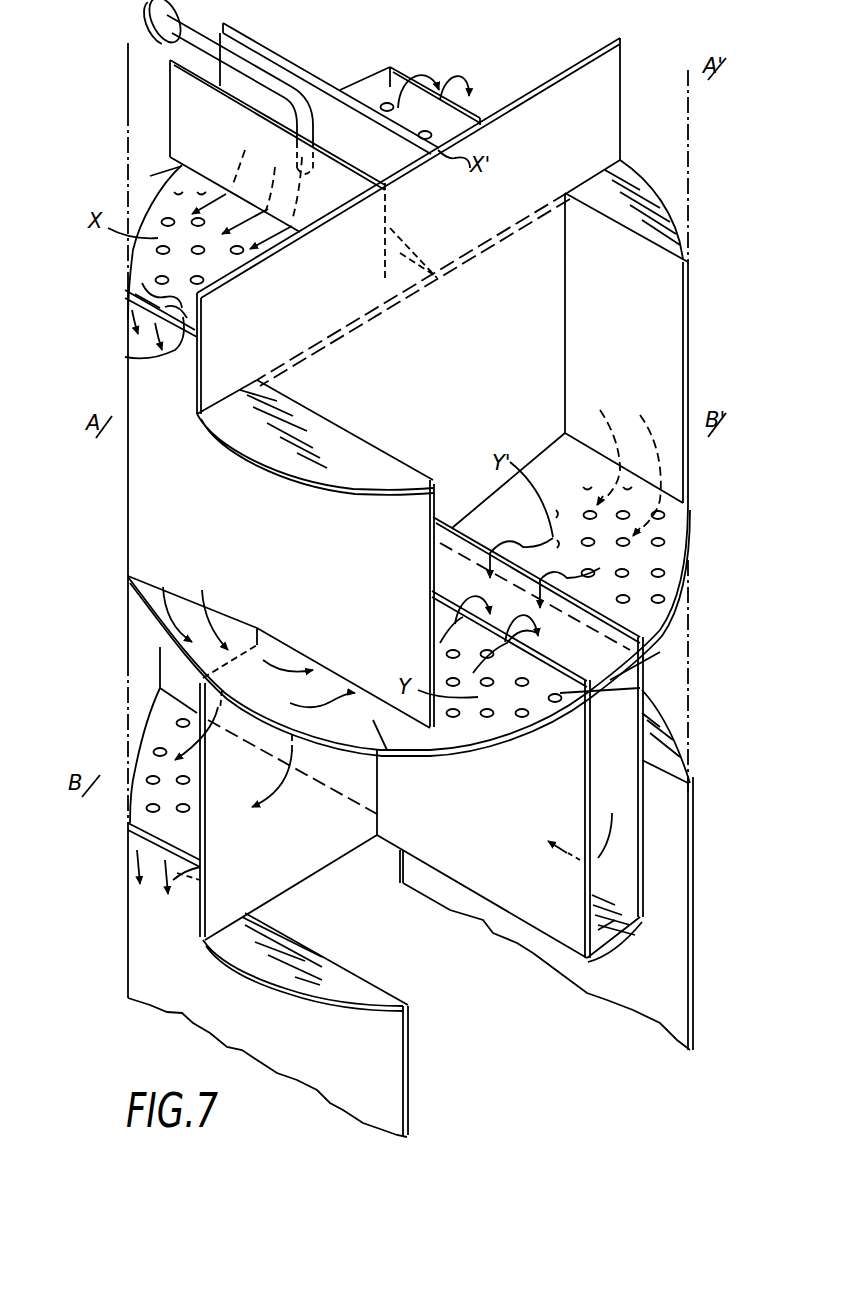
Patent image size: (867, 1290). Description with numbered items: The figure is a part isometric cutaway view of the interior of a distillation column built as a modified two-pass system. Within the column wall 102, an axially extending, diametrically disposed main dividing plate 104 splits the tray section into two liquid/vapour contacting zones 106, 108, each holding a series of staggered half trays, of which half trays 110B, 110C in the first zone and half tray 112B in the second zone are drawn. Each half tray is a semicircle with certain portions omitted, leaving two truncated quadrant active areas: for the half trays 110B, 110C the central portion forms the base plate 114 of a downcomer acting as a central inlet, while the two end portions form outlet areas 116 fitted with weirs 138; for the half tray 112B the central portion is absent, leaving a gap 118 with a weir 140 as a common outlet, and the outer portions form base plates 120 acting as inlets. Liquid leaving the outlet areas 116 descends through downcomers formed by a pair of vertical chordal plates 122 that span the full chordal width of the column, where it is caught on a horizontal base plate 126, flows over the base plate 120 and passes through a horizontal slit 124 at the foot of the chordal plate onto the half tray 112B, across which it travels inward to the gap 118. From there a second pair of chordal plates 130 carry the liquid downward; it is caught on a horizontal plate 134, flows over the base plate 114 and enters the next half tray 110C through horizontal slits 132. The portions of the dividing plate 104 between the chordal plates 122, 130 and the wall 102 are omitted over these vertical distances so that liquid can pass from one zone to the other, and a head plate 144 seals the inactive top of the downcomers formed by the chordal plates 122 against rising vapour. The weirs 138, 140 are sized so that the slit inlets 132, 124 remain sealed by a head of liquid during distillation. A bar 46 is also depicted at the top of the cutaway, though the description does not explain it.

The support bar 46 is at (483, 117).
The wall of the column 102 is at (128, 118).
The main column dividing plate 104 is at (598, 142).
The liquid/vapour contacting zone 106 is at (150, 258).
The liquid/vapour contacting zone 108 is at (532, 703).
The half tray 110B is at (365, 125).
The half tray 110C is at (150, 745).
The half tray 112B is at (655, 562).
The base plate of downcomer 114 is at (436, 288).
The outlet area 116 is at (135, 305).
The gap 118 is at (660, 652).
The base plate of downcomer 120 is at (387, 750).
The chordal plate 122 is at (645, 316).
The horizontal slit 124 is at (434, 742).
The horizontal base plate 126 is at (195, 657).
The chordal plate 130 is at (635, 747).
The horizontal slit 132 is at (150, 176).
The horizontal plate 134 is at (605, 930).
The weir 138 is at (170, 345).
The weir 140 is at (665, 595).
The head plate 144 is at (650, 222).